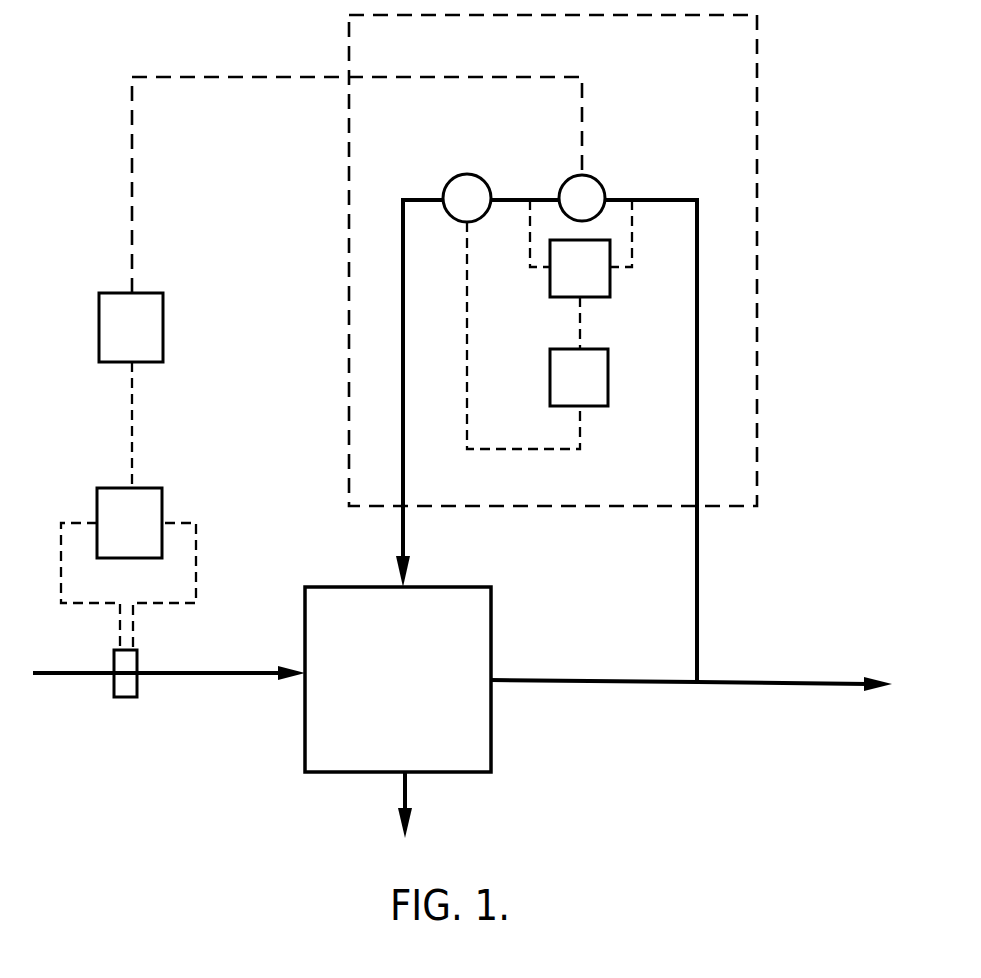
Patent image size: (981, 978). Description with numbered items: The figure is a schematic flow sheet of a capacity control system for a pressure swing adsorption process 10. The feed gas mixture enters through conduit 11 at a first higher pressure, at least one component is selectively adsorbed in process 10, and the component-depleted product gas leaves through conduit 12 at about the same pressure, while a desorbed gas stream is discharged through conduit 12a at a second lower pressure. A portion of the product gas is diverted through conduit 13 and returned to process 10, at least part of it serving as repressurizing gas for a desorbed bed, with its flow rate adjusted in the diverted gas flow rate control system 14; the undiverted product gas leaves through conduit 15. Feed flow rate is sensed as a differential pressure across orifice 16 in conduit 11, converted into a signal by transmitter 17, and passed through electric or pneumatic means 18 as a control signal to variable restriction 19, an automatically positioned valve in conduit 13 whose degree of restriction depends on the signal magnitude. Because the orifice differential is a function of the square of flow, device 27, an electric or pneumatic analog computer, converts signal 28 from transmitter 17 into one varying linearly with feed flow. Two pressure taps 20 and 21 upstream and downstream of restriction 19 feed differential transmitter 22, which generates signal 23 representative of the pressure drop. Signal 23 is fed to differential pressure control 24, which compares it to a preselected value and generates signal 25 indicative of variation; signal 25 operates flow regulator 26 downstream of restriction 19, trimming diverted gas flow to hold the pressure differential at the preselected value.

The pressure swing adsorption process 10 is at (492, 735).
The conduit 11 is at (55, 675).
The conduit 12 is at (583, 685).
The conduit 12a is at (400, 786).
The conduit 13 is at (697, 604).
The diverted gas flow rate control system 14 is at (757, 261).
The conduit 15 is at (762, 687).
The orifice 16 is at (140, 683).
The transmitter 17 is at (162, 505).
The electric or pneumatic means 18 is at (131, 196).
The variable restriction 19 is at (601, 182).
The pressure tap 20 is at (635, 233).
The pressure tap 21 is at (530, 233).
The differential transmitter 22 is at (612, 283).
The signal 23 is at (583, 324).
The differential pressure control 24 is at (610, 400).
The signal 25 is at (468, 390).
The flow regulator 26 is at (452, 180).
The device 27 is at (165, 315).
The signal 28 is at (132, 425).